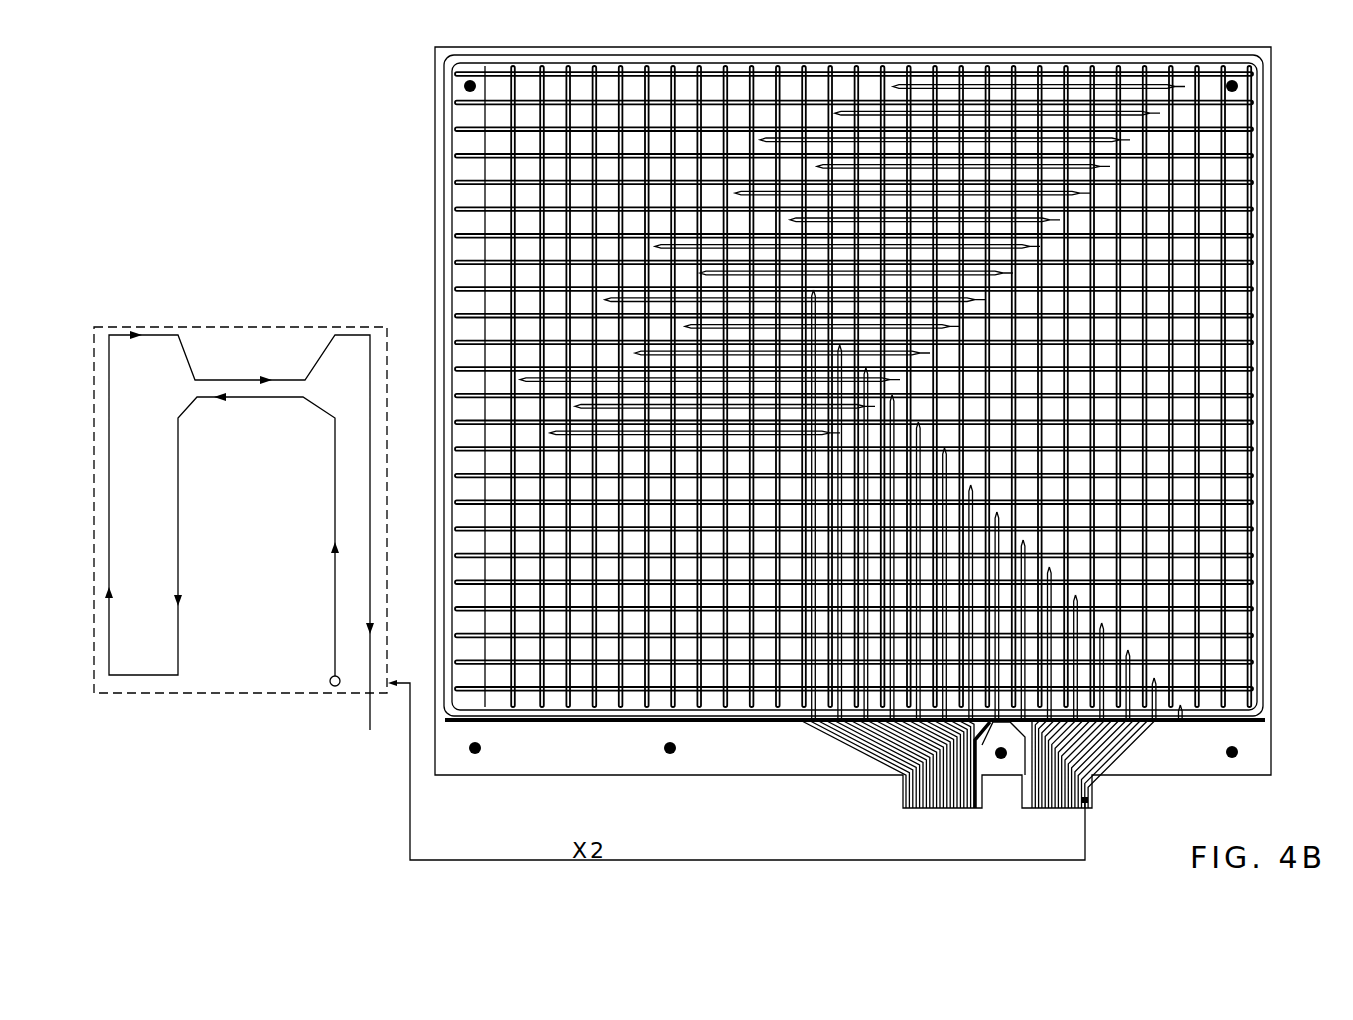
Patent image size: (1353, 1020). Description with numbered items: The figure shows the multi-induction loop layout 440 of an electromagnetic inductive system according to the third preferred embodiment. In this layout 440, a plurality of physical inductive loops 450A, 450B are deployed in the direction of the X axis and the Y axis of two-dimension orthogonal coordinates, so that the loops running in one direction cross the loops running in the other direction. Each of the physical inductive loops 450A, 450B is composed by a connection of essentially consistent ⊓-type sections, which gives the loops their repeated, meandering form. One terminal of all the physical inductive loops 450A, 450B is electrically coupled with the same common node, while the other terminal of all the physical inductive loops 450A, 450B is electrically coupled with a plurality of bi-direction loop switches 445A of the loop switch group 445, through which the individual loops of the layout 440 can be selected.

The multi-induction loop layout 440 is at (432, 76).
The physical inductive loop 450A is at (1172, 88).
The physical inductive loop 450B is at (1152, 678).
The loop switch group 445 is at (543, 722).
The bi-direction loop switch 445A is at (333, 692).